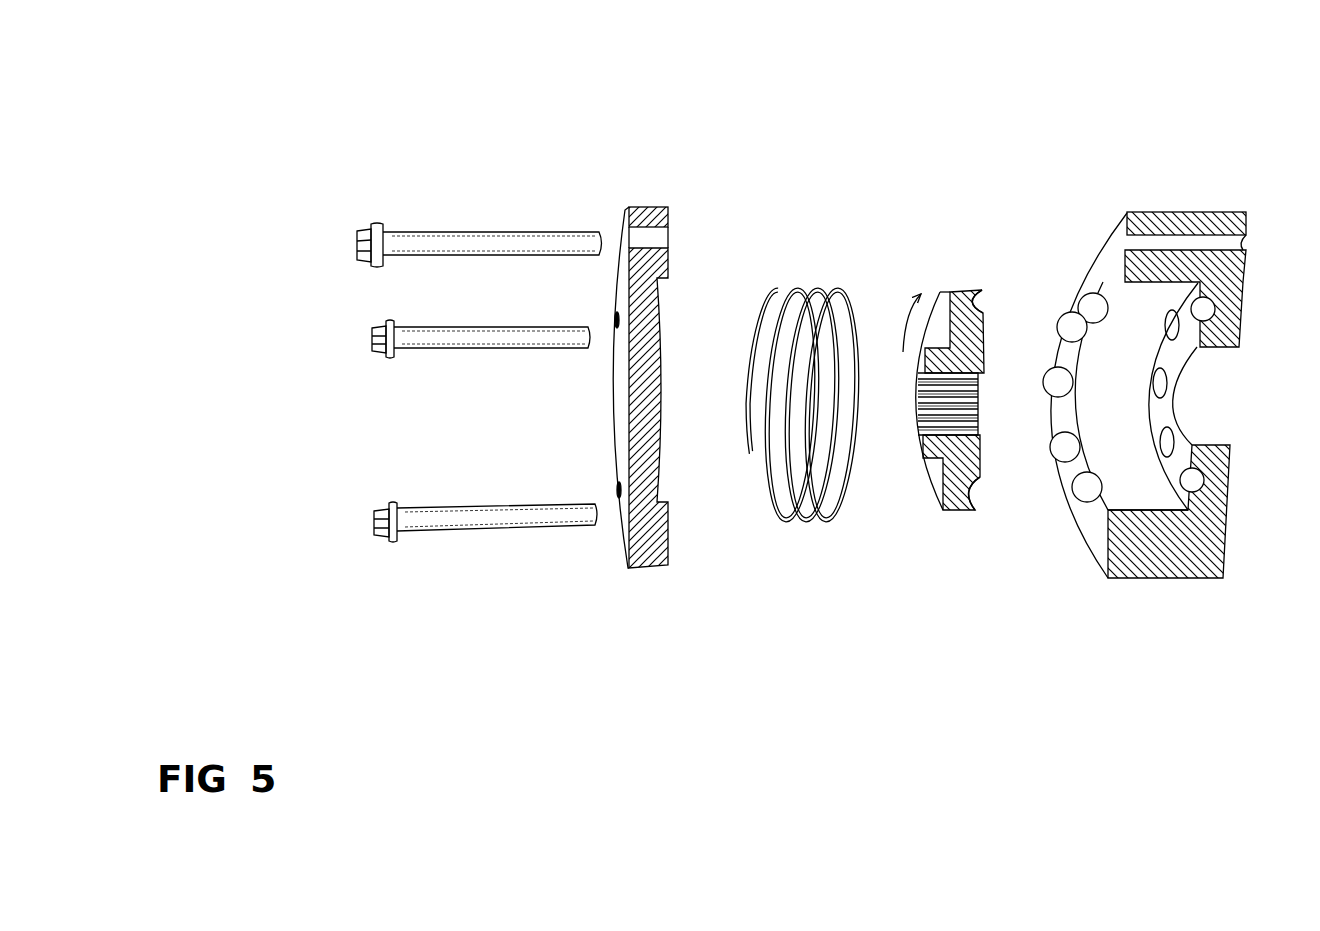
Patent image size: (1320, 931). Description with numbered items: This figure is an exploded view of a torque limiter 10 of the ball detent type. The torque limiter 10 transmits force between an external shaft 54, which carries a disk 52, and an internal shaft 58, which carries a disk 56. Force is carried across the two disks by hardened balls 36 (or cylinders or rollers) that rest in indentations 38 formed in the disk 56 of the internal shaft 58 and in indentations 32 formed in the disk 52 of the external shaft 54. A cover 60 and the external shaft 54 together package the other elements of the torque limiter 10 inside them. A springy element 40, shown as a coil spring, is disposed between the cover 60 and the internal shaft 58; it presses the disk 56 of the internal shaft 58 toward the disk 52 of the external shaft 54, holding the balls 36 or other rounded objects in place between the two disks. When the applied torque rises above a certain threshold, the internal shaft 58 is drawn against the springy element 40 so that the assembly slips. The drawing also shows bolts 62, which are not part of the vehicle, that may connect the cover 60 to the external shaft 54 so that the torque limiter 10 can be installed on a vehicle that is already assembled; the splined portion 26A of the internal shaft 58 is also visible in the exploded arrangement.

The torque limiter 10 is at (336, 155).
The bolts 62 is at (479, 223).
The cover 60 is at (636, 206).
The springy element 40 is at (820, 290).
The internal shaft 58 is at (970, 377).
The splined portion 26A is at (973, 393).
The indentations 38 is at (983, 311).
The external shaft 54 is at (1144, 384).
The disk 52 is at (1172, 353).
The indentations 32 is at (1205, 299).
The hardened balls 36 is at (1090, 307).
The disk 56 is at (982, 468).